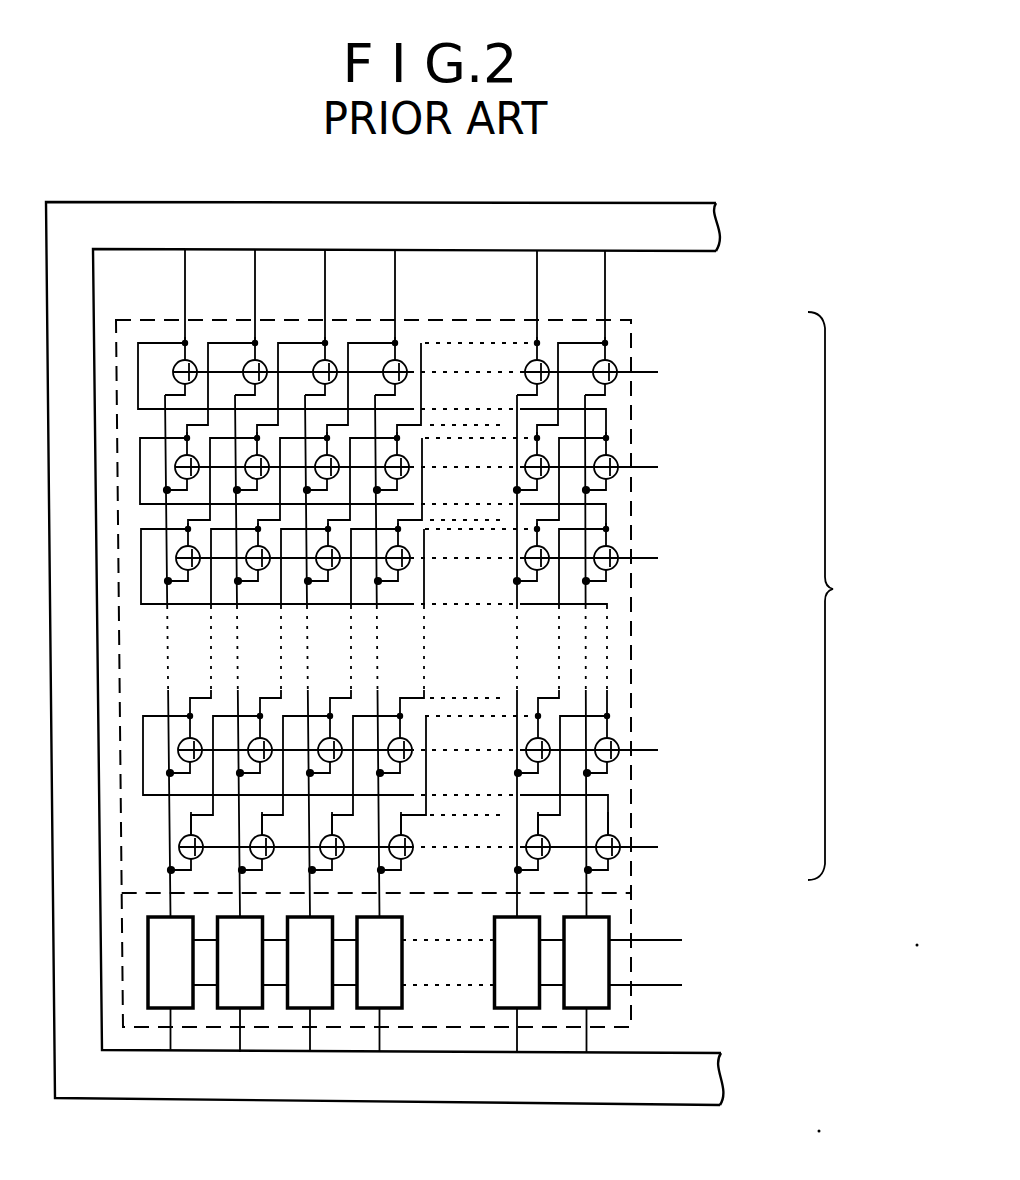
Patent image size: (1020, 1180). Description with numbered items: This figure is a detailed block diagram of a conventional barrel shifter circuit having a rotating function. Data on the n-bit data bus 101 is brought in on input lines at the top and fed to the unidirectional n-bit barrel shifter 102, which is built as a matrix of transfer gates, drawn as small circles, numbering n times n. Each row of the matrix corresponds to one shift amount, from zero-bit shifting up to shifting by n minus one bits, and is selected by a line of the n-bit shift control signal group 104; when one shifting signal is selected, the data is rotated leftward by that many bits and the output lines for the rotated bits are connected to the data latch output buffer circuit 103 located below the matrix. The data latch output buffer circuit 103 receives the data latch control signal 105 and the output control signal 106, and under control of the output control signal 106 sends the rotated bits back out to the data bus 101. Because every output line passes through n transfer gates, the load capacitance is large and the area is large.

The data bus 101 is at (620, 1105).
The unidirectional n-bit barrel shifter 102 is at (633, 690).
The data latch output buffer circuit 103 is at (636, 1014).
The n-bit shift control signal group 104 is at (785, 596).
The data latch control signal 105 is at (663, 940).
The output control signal 106 is at (665, 982).